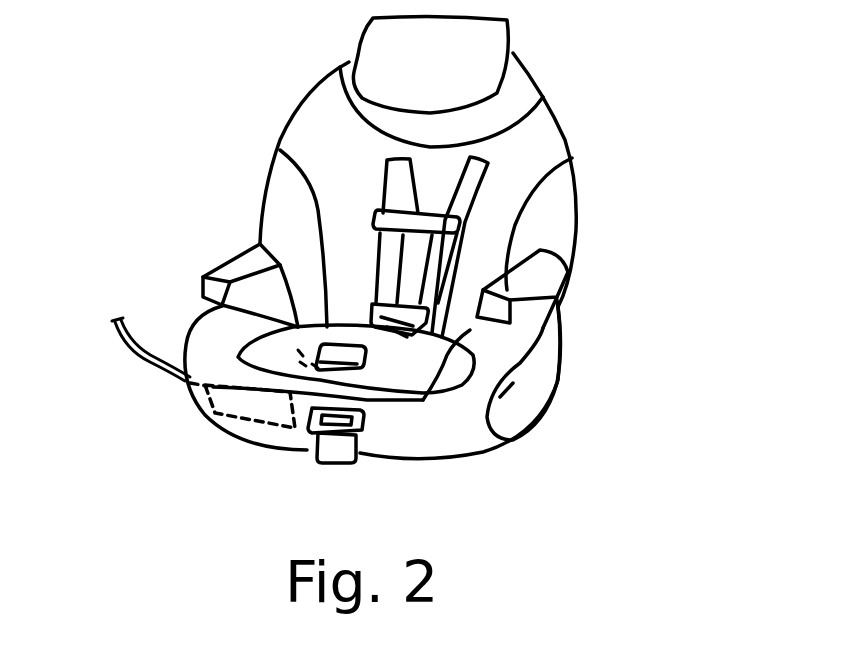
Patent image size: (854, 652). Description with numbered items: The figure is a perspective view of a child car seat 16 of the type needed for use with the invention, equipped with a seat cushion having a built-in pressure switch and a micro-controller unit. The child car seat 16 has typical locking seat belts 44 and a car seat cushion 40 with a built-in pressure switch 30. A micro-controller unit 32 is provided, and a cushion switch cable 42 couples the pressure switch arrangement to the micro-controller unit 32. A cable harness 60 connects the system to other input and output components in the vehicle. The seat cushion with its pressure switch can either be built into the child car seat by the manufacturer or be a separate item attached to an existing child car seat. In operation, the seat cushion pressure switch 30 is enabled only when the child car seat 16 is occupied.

The child car seat 16 is at (580, 190).
The car seat cushion 40 is at (450, 370).
The locking seat belts 44 is at (483, 170).
The pressure switch 30 is at (340, 355).
The cushion switch cable 42 is at (303, 370).
The micro-controller unit 32 is at (247, 417).
The cable harness 60 is at (128, 347).